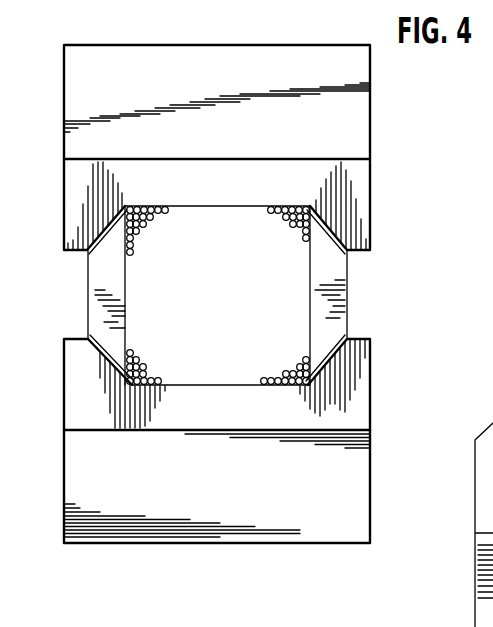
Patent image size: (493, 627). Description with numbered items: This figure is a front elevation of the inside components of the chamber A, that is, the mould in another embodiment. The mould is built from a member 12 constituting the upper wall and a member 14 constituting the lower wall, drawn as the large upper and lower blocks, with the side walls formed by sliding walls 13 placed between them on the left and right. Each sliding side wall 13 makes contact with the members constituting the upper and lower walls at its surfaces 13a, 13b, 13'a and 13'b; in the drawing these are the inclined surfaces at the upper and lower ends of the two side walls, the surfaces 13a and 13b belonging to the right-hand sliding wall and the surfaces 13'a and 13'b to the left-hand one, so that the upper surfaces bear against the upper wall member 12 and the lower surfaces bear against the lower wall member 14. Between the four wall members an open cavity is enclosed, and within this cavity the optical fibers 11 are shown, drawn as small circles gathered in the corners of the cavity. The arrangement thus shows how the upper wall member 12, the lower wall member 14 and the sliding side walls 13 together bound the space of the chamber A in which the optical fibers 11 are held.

The member constituting the upper wall of the mould 12 is at (270, 53).
The member constituting the lower wall of the mould 14 is at (252, 507).
The sliding wall 13 is at (273, 416).
The contact surface of sliding side wall 13a is at (337, 245).
The contact surface of sliding side wall 13b is at (337, 347).
The contact surface of sliding side wall 13'a is at (85, 221).
The contact surface of sliding side wall 13'b is at (114, 382).
The optical fibers 11 is at (220, 348).
The chamber A is at (173, 205).